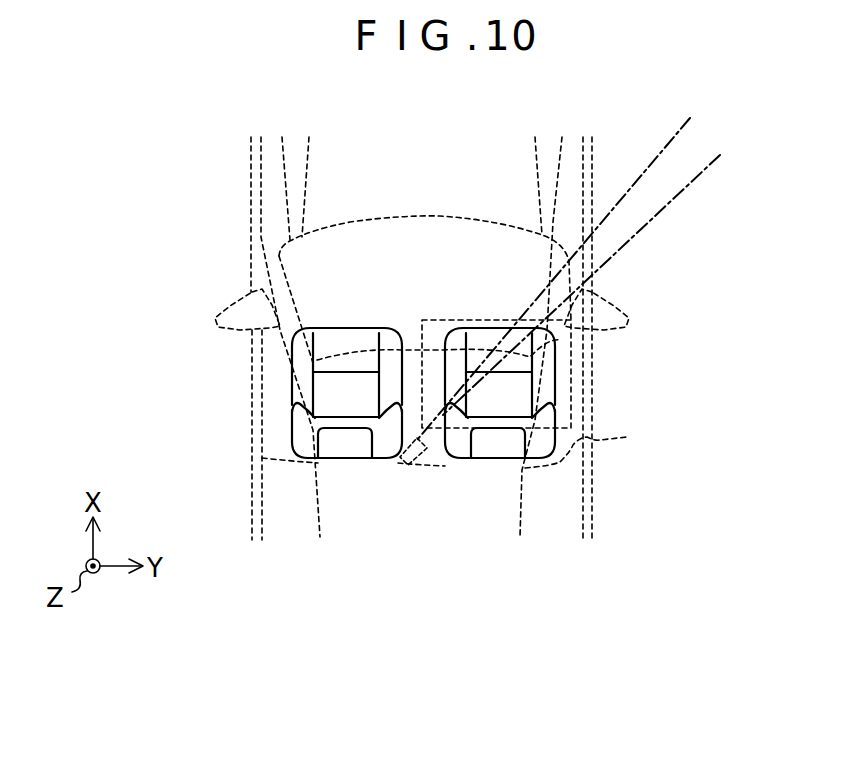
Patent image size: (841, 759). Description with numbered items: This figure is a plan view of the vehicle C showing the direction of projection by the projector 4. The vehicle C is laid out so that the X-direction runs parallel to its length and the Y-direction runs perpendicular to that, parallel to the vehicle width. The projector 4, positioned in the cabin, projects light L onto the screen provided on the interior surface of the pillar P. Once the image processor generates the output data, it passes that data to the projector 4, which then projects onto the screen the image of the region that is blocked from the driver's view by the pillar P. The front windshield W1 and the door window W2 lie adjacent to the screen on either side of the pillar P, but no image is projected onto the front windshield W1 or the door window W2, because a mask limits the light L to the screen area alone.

The vehicle C is at (251, 194).
The front windshield W1 is at (395, 222).
The door window W2 is at (465, 447).
The light L is at (543, 297).
The pillar P is at (572, 345).
The projector 4 is at (426, 452).